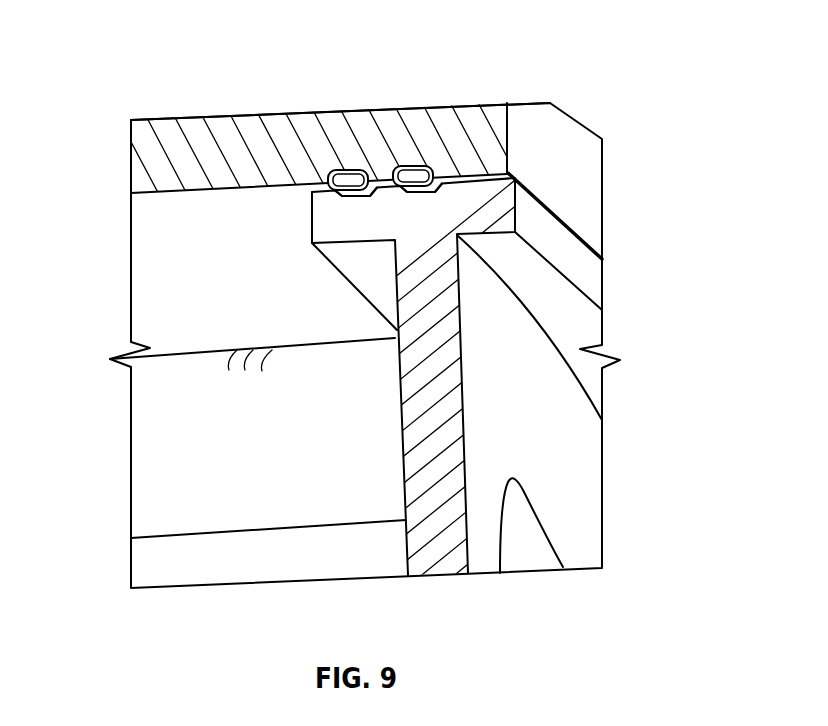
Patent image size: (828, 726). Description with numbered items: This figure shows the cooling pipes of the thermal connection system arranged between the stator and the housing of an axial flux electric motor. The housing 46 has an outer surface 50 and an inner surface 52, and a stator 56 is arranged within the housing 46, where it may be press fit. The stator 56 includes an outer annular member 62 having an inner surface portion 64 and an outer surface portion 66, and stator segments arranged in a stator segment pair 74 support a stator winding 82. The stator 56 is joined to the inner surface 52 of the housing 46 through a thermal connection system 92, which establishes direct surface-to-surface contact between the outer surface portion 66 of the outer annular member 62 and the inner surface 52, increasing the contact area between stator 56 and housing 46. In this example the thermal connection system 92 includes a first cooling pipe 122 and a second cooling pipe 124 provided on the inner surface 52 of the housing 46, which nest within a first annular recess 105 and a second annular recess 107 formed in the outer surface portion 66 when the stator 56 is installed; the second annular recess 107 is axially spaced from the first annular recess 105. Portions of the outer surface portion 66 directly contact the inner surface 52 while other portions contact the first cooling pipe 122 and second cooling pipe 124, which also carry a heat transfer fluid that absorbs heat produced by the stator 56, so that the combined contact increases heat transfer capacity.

The housing 46 is at (220, 138).
The outer surface 50 is at (268, 113).
The inner surface 52 is at (176, 232).
The stator 56 is at (620, 551).
The outer annular member 62 is at (538, 218).
The inner surface portion 64 is at (535, 263).
The outer surface portion 66 is at (494, 170).
The stator segment pair 74 is at (572, 450).
The stator winding 82 is at (168, 420).
The thermal connection system 92 is at (286, 228).
The first annular recess 105 is at (376, 186).
The second annular recess 107 is at (441, 184).
The first cooling pipe 122 is at (355, 194).
The second cooling pipe 124 is at (423, 191).